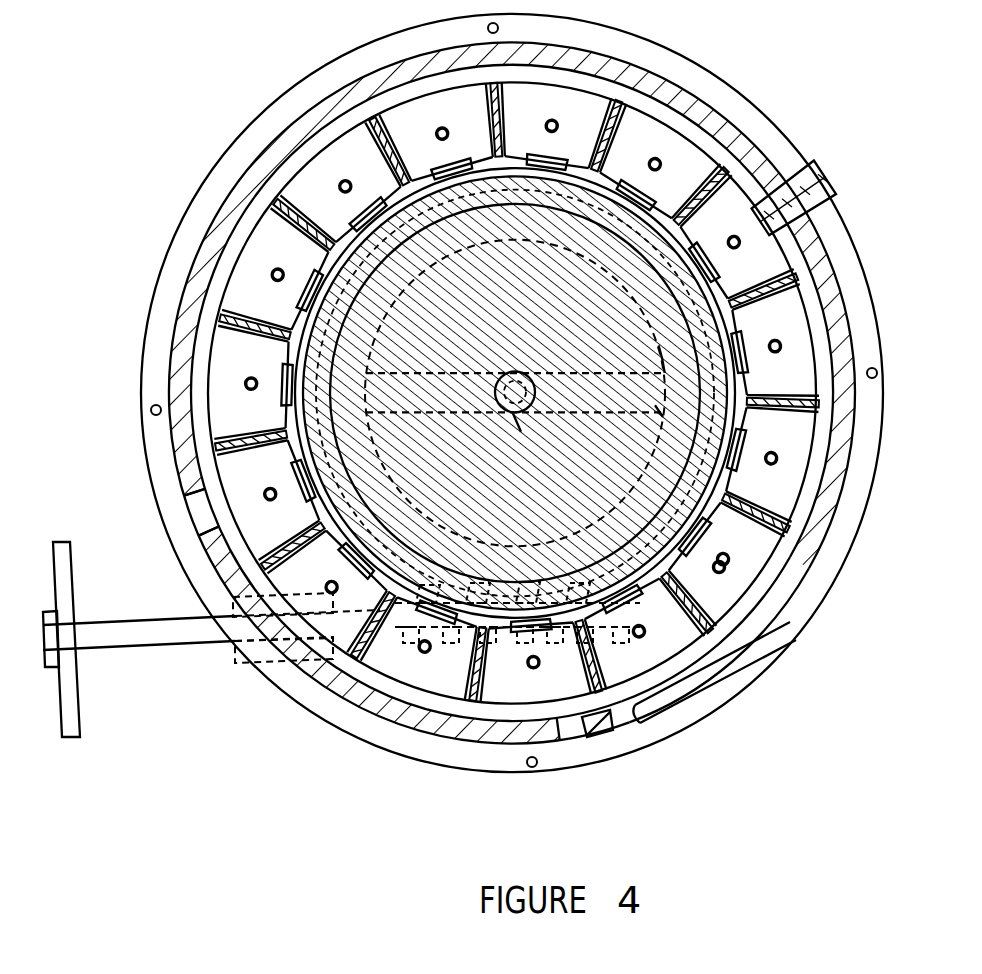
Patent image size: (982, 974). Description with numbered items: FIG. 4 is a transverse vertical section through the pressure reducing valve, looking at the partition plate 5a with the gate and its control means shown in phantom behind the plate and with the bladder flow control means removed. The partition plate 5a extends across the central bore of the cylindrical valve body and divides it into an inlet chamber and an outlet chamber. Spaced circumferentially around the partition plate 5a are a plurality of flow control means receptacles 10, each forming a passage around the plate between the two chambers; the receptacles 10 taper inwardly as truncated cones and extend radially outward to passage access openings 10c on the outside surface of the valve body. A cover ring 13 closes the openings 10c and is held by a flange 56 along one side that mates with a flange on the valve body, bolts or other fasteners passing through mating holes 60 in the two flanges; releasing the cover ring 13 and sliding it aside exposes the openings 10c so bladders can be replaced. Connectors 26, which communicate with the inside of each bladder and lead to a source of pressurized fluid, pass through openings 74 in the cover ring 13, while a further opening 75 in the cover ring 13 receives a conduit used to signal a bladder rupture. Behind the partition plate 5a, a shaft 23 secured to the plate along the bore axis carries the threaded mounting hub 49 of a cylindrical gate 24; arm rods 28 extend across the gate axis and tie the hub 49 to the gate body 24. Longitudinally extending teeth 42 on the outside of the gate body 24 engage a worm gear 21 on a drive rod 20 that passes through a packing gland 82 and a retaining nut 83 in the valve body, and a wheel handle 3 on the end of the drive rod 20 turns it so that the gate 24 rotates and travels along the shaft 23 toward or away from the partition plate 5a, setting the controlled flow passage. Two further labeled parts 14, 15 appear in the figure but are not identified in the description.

The flange 56 is at (343, 75).
The passage access opening 10c is at (305, 150).
The connector 26 is at (787, 221).
The cylindrical gate 24 is at (609, 277).
The mounting hub 49 is at (517, 372).
The teeth 42 is at (330, 390).
The arm rods 28 is at (423, 420).
The shaft 23 is at (564, 451).
The partition plate 5a is at (515, 393).
The flow control means receptacle 10 is at (242, 323).
The opening 74 is at (215, 528).
The wheel handle 3 is at (72, 594).
The drive rod 20 is at (118, 637).
The retaining nut 83 is at (276, 662).
The packing gland 82 is at (317, 663).
The worm gear 21 is at (414, 651).
The opening 75 is at (628, 717).
The mating holes 60 is at (532, 768).
The cover ring 13 is at (677, 693).
The key 14 is at (720, 572).
The pole piece 15 is at (697, 528).